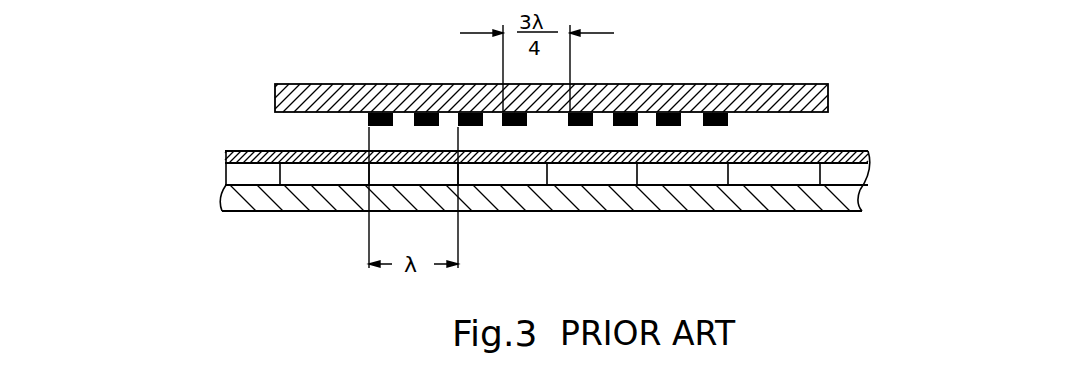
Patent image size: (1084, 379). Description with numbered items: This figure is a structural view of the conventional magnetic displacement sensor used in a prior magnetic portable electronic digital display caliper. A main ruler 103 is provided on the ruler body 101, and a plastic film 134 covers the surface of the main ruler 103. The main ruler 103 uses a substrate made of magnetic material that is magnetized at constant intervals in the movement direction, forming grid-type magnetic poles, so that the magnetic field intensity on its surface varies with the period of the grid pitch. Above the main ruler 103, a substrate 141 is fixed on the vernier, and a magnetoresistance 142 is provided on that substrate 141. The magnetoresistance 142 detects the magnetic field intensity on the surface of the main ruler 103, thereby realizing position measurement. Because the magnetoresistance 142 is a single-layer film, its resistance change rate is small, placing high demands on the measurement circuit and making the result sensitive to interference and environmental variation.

The ruler body 101 is at (233, 204).
The main ruler 103 is at (250, 179).
The plastic film 134 is at (260, 152).
The substrate 141 is at (472, 100).
The magnetoresistance 142 is at (728, 121).